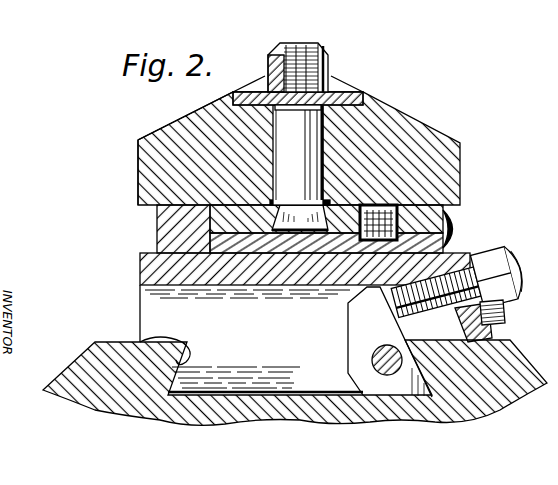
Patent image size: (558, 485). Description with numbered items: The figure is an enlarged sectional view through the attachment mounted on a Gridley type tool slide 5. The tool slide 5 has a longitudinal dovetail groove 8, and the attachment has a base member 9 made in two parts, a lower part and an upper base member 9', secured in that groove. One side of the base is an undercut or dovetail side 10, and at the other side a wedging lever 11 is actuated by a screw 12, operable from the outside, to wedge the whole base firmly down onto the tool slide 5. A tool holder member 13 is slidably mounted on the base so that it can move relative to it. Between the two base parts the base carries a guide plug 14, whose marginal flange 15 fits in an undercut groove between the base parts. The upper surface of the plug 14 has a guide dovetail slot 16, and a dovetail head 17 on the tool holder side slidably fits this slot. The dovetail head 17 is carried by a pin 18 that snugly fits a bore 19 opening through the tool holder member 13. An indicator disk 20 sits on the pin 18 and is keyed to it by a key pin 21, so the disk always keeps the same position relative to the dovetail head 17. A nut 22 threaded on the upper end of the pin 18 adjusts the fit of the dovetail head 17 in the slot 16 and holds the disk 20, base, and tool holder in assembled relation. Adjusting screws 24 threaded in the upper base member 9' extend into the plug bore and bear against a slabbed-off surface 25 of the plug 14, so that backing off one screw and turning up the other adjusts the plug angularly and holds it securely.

The tool slide 5 is at (69, 367).
The dovetail groove 8 is at (143, 332).
The base member 9 is at (293, 269).
The upper base member 9' is at (285, 224).
The dovetail side 10 is at (178, 371).
The wedging lever 11 is at (348, 344).
The screw 12 is at (513, 273).
The tool holder member 13 is at (418, 124).
The guide plug 14 is at (210, 215).
The marginal flange 15 is at (198, 253).
The guide dovetail slot 16 is at (245, 255).
The dovetail head 17 is at (300, 250).
The pin 18 is at (298, 155).
The bore 19 is at (243, 140).
The indicator disk 20 is at (351, 100).
The key pin 21 is at (297, 103).
The nut 22 is at (266, 65).
The adjusting screw 24 is at (448, 222).
The slabbed-off surface 25 is at (338, 283).